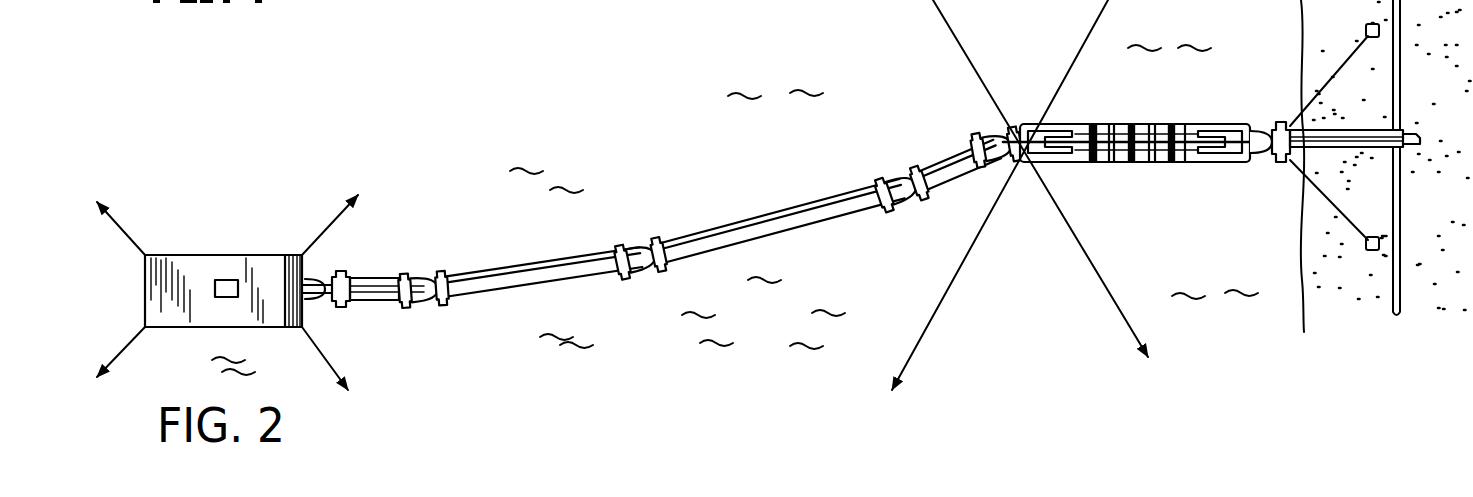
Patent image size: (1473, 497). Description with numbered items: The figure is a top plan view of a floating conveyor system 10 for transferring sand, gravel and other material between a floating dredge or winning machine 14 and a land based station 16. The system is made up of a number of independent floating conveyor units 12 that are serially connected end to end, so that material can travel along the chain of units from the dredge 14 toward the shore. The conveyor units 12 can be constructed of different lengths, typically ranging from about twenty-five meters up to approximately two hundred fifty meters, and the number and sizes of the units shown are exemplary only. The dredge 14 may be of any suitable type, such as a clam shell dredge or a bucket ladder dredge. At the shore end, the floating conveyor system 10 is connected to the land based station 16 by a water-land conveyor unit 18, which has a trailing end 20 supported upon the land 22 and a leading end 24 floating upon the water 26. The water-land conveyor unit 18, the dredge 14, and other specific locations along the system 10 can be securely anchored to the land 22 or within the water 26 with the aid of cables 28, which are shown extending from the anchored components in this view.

The floating conveyor system 10 is at (470, 380).
The floating conveyor unit 12 is at (412, 256).
The floating dredge 14 is at (205, 240).
The land based station 16 is at (1414, 110).
The water-land conveyor unit 18 is at (1336, 105).
The trailing end 20 is at (1425, 136).
The land 22 is at (1458, 239).
The leading end 24 is at (1275, 124).
The water 26 is at (780, 325).
The cables 28 is at (121, 220).